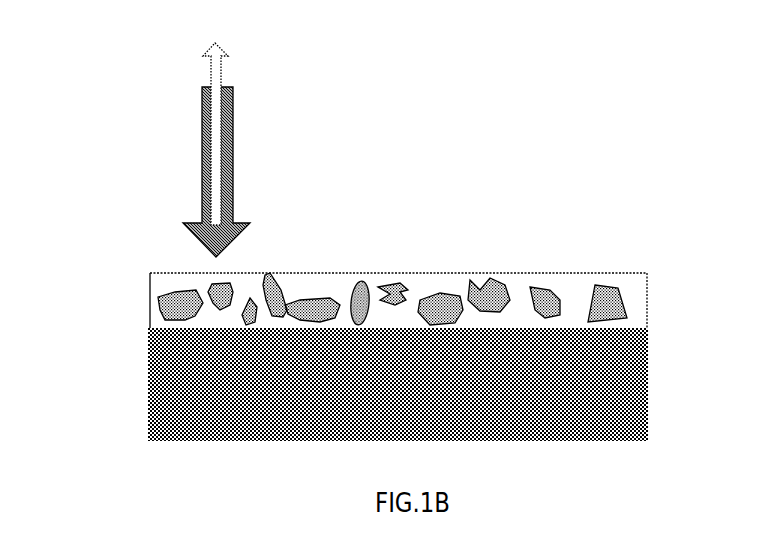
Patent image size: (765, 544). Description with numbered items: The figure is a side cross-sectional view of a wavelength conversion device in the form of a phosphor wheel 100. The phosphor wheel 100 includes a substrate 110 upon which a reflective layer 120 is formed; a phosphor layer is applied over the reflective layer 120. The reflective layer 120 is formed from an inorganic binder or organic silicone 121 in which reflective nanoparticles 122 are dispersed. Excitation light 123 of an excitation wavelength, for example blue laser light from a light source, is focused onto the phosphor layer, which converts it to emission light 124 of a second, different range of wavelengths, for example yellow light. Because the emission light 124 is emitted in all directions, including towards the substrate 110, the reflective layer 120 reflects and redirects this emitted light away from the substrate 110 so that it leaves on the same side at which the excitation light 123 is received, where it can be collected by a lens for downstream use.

The phosphor wheel 100 is at (60, 36).
The substrate 110 is at (402, 394).
The reflective layer 120 is at (660, 273).
The inorganic binder or organic silicone 121 is at (567, 292).
The reflective nanoparticle 122 is at (177, 303).
The excitation light 123 is at (232, 202).
The emission light 124 is at (217, 70).